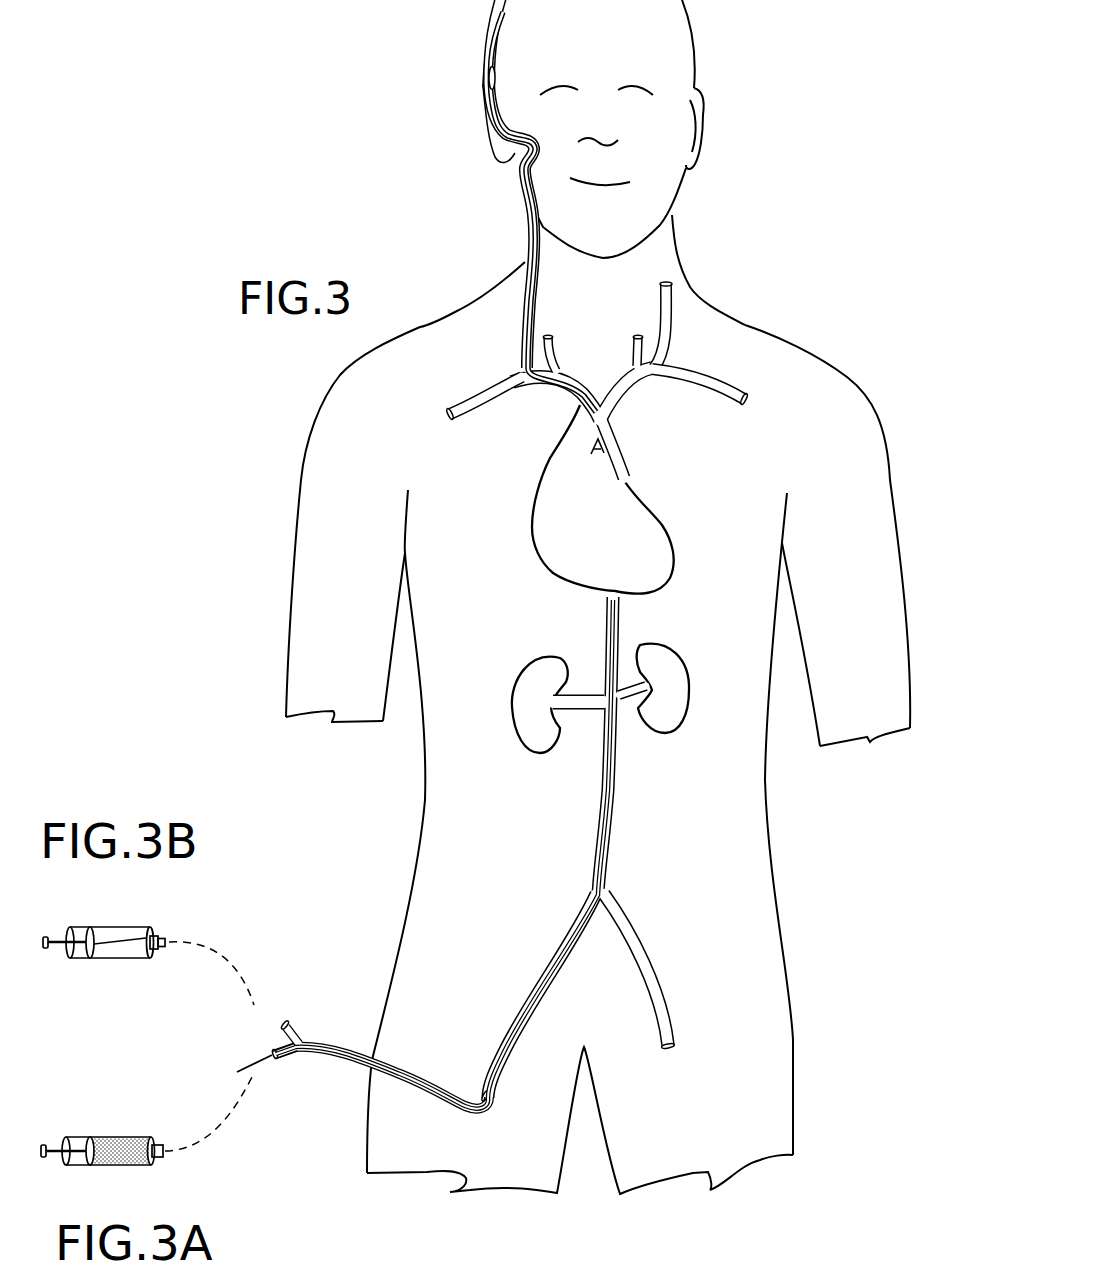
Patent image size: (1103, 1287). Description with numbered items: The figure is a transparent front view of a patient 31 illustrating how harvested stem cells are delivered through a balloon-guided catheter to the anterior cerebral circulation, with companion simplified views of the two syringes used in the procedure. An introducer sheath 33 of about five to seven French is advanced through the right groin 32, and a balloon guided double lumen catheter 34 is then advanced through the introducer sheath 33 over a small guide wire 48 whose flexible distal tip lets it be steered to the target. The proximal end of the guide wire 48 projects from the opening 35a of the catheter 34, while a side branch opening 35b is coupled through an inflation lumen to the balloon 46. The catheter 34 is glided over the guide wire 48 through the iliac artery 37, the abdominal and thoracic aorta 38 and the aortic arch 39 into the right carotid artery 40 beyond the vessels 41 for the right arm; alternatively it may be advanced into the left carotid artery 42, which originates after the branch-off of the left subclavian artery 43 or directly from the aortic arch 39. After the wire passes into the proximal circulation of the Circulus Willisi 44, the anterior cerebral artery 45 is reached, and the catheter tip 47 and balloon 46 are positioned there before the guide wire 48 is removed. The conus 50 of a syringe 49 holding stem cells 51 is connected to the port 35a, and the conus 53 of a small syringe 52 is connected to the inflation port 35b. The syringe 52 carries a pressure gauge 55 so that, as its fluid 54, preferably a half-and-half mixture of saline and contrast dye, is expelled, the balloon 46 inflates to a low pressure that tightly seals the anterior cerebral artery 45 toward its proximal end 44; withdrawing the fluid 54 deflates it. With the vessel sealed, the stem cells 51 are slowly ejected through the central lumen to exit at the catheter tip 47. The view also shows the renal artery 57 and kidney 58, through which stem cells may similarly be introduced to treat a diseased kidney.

In FIG. 3, the patient 31 is at (323, 461).
In FIG. 3, the right groin 32 is at (444, 1150).
In FIG. 3, the introducer sheath 33 is at (490, 1107).
In FIG. 3, the balloon guided double lumen catheter 34 is at (431, 1093).
In FIG. 3, the opening 35a is at (288, 1060).
In FIG. 3, the side branch opening 35b is at (292, 1020).
In FIG. 3, the iliac artery 37 is at (530, 988).
In FIG. 3, the abdominal and thoracic aorta 38 is at (614, 818).
In FIG. 3, the aortic arch 39 is at (586, 383).
In FIG. 3, the right carotid artery 40 is at (536, 300).
In FIG. 3, the vessels for the right arm 41 is at (468, 399).
In FIG. 3, the left carotid artery 42 is at (670, 331).
In FIG. 3, the left subclavian artery 43 is at (717, 375).
In FIG. 3, the Circulus Willisi 44 is at (495, 163).
In FIG. 3, the anterior cerebral artery 45 is at (516, 150).
In FIG. 3, the balloon 46 is at (486, 78).
In FIG. 3, the catheter tip 47 is at (483, 53).
In FIG. 3, the guide wire 48 is at (521, 246).
In FIG. 3A, the syringe 49 is at (110, 1168).
In FIG. 3A, the conus 50 is at (154, 1168).
In FIG. 3A, the stem cells 51 is at (112, 1143).
In FIG. 3B, the syringe 52 is at (113, 960).
In FIG. 3B, the conus 53 is at (160, 933).
In FIG. 3B, the fluid 54 is at (118, 929).
In FIG. 3B, the pressure gauge 55 is at (153, 961).
In FIG. 3, the renal artery 57 is at (632, 710).
In FIG. 3, the kidney 58 is at (678, 695).